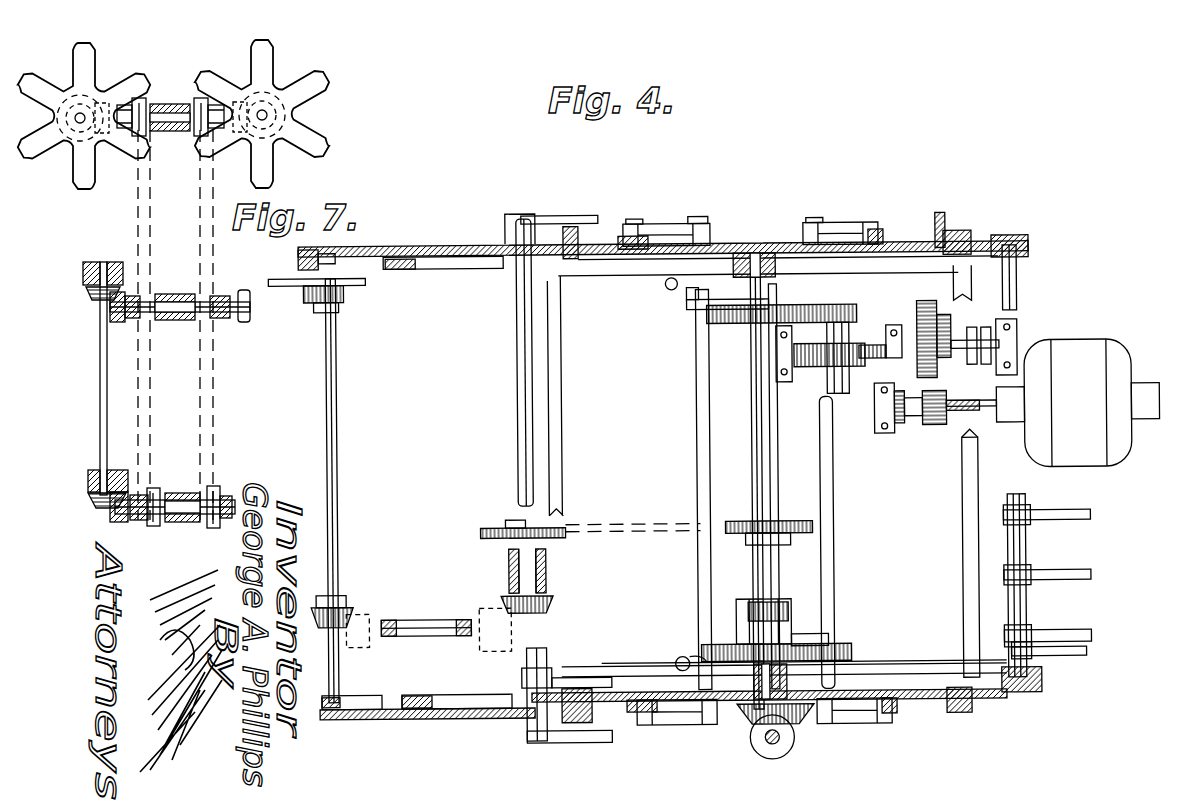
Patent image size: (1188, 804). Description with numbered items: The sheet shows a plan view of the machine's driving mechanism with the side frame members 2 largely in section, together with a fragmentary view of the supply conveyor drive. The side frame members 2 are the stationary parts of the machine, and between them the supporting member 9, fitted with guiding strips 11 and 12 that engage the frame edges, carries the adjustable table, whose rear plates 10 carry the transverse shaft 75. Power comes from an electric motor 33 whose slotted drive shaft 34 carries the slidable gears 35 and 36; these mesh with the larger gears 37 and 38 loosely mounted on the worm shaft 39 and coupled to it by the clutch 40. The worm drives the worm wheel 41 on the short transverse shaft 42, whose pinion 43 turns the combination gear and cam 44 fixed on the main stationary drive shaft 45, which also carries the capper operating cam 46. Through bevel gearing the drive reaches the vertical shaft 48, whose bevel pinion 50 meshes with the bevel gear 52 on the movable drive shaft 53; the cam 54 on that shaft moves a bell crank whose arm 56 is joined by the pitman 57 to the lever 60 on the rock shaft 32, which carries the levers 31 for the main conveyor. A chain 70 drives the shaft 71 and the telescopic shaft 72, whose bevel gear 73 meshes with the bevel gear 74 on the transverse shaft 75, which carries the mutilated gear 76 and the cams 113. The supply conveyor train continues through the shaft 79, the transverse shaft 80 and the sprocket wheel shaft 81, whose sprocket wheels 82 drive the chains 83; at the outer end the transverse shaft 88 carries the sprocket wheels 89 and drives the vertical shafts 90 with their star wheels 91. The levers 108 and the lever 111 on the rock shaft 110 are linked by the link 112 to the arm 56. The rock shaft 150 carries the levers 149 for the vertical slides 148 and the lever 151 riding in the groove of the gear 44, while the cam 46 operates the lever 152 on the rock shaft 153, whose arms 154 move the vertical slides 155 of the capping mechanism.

In FIG. 4, the side frame members 2 is at (737, 246).
In FIG. 4, the supporting member 9 is at (470, 267).
In FIG. 4, the rear plates 10 is at (468, 245).
In FIG. 4, the guiding strip 11 is at (943, 230).
In FIG. 4, the guiding strip 12 is at (572, 232).
In FIG. 4, the levers 31 is at (1062, 578).
In FIG. 4, the rock shaft 32 is at (1025, 610).
In FIG. 4, the electric motor 33 is at (1090, 345).
In FIG. 4, the slotted drive shaft 34 is at (975, 415).
In FIG. 4, the gear 35 is at (935, 428).
In FIG. 4, the gear 36 is at (886, 437).
In FIG. 4, the gear 37 is at (1010, 262).
In FIG. 4, the gear 38 is at (928, 302).
In FIG. 4, the worm shaft 39 is at (936, 330).
In FIG. 4, the clutch 40 is at (1000, 340).
In FIG. 4, the worm wheel 41 is at (815, 370).
In FIG. 4, the short transverse shaft 42 is at (785, 328).
In FIG. 4, the pinion 43 is at (888, 342).
In FIG. 4, the combination gear and cam 44 is at (735, 325).
In FIG. 4, the main stationary drive shaft 45 is at (755, 254).
In FIG. 4, the capper operating cam 46 is at (745, 605).
In FIG. 4, the vertical shaft 48 is at (766, 752).
In FIG. 4, the bevel pinion 50 is at (778, 742).
In FIG. 4, the bevel gear 52 is at (802, 722).
In FIG. 4, the movable drive shaft 53 is at (760, 262).
In FIG. 4, the cam 54 is at (735, 650).
In FIG. 4, the arm 56 is at (700, 660).
In FIG. 4, the pitman 57 is at (925, 663).
In FIG. 4, the lever 60 is at (1062, 660).
In FIG. 4, the chain 70 is at (652, 527).
In FIG. 4, the shaft 71 is at (548, 566).
In FIG. 4, the telescopic shaft 72 is at (440, 618).
In FIG. 4, the bevel gear 73 is at (358, 648).
In FIG. 4, the bevel gear 74 is at (318, 612).
In FIG. 4, the transverse shaft 75 is at (336, 578).
In FIG. 4, the mutilated gear 76 is at (293, 285).
In FIG. 7, the shaft 79 is at (205, 303).
In FIG. 7, the transverse shaft 80 is at (100, 355).
In FIG. 7, the sprocket wheel shaft 81 is at (180, 500).
In FIG. 7, the sprocket wheels 82 is at (212, 528).
In FIG. 7, the chains 83 is at (208, 445).
In FIG. 7, the transverse shaft 88 is at (174, 130).
In FIG. 7, the sprocket wheels 89 is at (142, 100).
In FIG. 7, the vertical shafts 90 is at (81, 116).
In FIG. 7, the star wheels 91 is at (320, 130).
In FIG. 4, the levers 108 is at (520, 230).
In FIG. 4, the rock shaft 110 is at (520, 397).
In FIG. 4, the lever 111 is at (545, 675).
In FIG. 4, the link 112 is at (560, 686).
In FIG. 4, the cams 113 is at (368, 249).
In FIG. 4, the vertical slides 148 is at (625, 240).
In FIG. 4, the levers 149 is at (670, 222).
In FIG. 4, the rock shaft 150 is at (697, 455).
In FIG. 4, the lever 151 is at (688, 305).
In FIG. 4, the lever 152 is at (822, 640).
In FIG. 4, the rock shaft 153 is at (835, 470).
In FIG. 4, the arms 154 is at (845, 222).
In FIG. 4, the vertical slides 155 is at (878, 232).